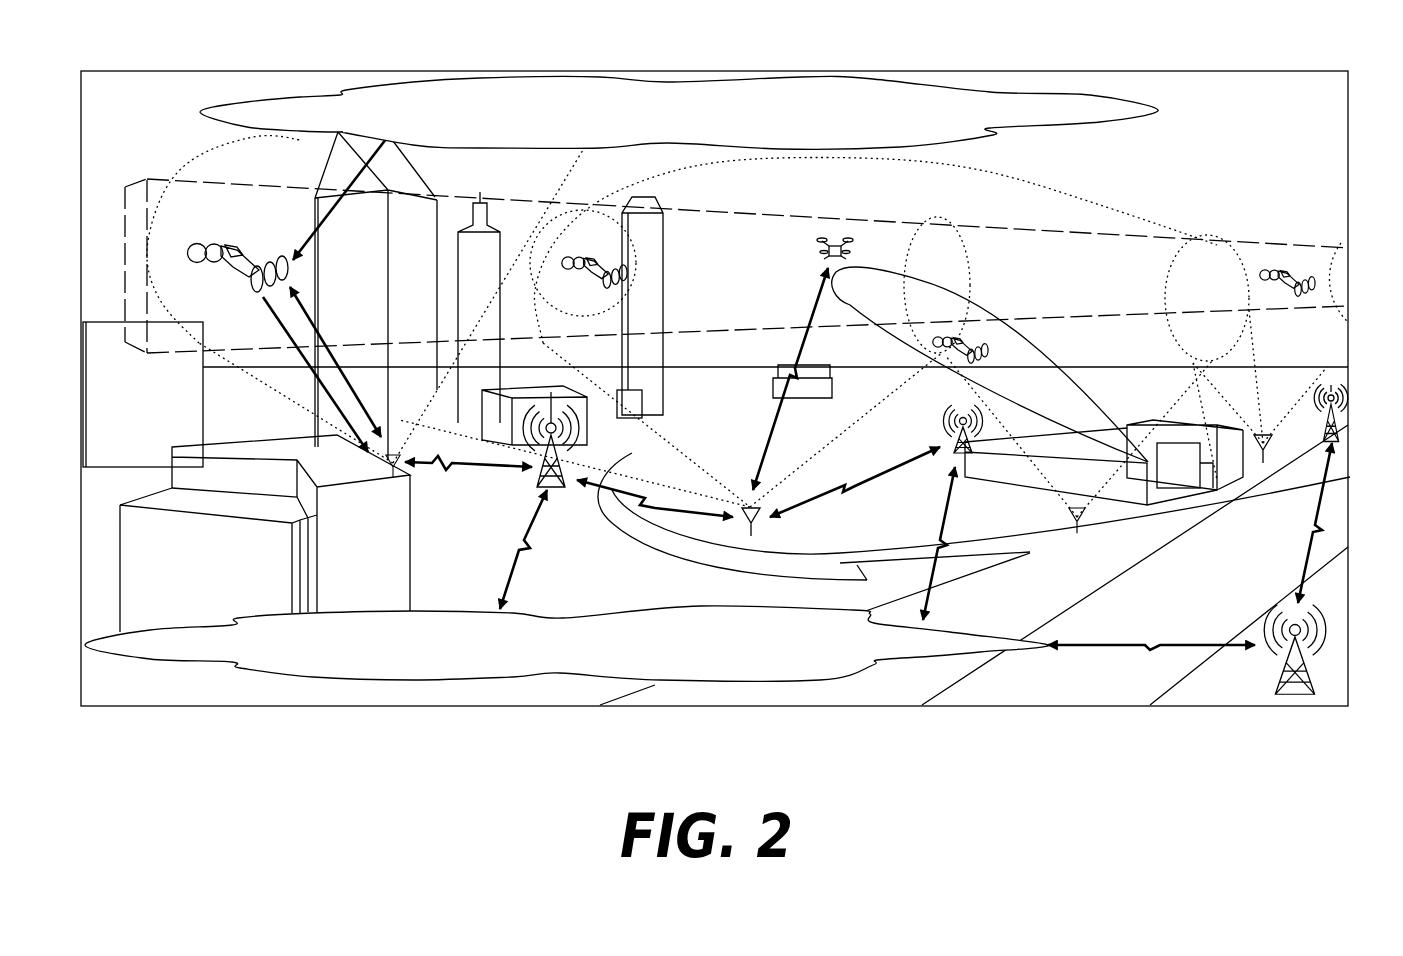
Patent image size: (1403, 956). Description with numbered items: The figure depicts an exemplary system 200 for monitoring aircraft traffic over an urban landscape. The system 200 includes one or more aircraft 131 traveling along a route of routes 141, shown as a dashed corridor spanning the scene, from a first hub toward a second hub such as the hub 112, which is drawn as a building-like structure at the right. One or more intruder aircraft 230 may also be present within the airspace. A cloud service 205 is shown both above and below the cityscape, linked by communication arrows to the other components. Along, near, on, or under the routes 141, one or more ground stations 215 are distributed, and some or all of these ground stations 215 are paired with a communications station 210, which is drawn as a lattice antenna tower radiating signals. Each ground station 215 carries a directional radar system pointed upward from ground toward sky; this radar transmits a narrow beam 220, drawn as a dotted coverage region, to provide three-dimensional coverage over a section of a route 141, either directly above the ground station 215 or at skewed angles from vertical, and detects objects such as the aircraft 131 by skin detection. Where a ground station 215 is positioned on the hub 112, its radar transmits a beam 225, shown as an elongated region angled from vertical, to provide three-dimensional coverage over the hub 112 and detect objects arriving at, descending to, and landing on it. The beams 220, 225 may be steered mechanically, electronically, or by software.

The system 200 is at (1302, 39).
The cloud service 205 is at (1047, 93).
The beam 220 is at (180, 163).
The aircraft 131 is at (213, 243).
The routes 141 is at (123, 288).
The intruder aircraft 230 is at (822, 251).
The beam 225 is at (1105, 425).
The communications station 210 is at (530, 477).
The ground station 215 is at (393, 470).
The hub 112 is at (1167, 490).